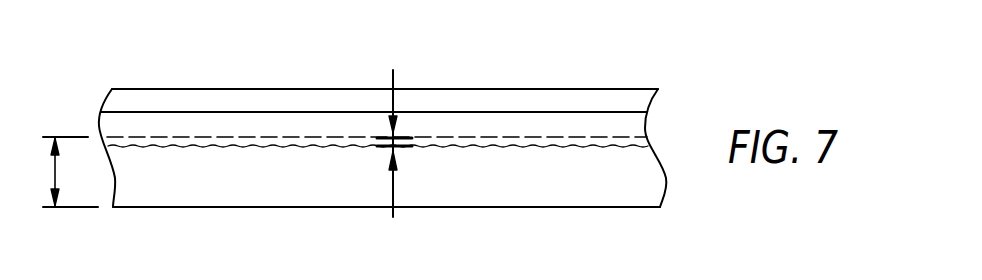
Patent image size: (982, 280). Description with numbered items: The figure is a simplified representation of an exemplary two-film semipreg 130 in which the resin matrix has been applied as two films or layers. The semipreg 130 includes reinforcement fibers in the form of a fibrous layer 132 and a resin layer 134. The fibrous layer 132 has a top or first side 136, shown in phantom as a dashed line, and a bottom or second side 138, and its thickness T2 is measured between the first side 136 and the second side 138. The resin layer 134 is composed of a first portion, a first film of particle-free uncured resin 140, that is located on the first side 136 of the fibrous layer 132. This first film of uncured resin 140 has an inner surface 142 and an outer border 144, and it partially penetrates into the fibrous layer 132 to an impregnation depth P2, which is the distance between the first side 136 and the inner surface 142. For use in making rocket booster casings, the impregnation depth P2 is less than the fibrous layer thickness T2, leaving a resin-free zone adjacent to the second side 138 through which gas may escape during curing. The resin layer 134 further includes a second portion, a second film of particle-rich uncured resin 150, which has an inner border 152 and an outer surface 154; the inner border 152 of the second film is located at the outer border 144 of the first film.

The 2-film semipreg 130 is at (617, 67).
The fibrous layer 132 is at (620, 170).
The resin layer 134 is at (97, 90).
The first side 136 is at (615, 138).
The second side 138 is at (255, 207).
The first film of particle-free uncured resin 140 is at (113, 124).
The inner surface 142 is at (182, 147).
The outer border 144 is at (562, 110).
The second film of particle-rich uncured resin 150 is at (180, 98).
The inner border 152 is at (497, 115).
The outer surface 154 is at (273, 88).
The impregnation depth P2 is at (395, 99).
The fibrous layer thickness T2 is at (70, 172).